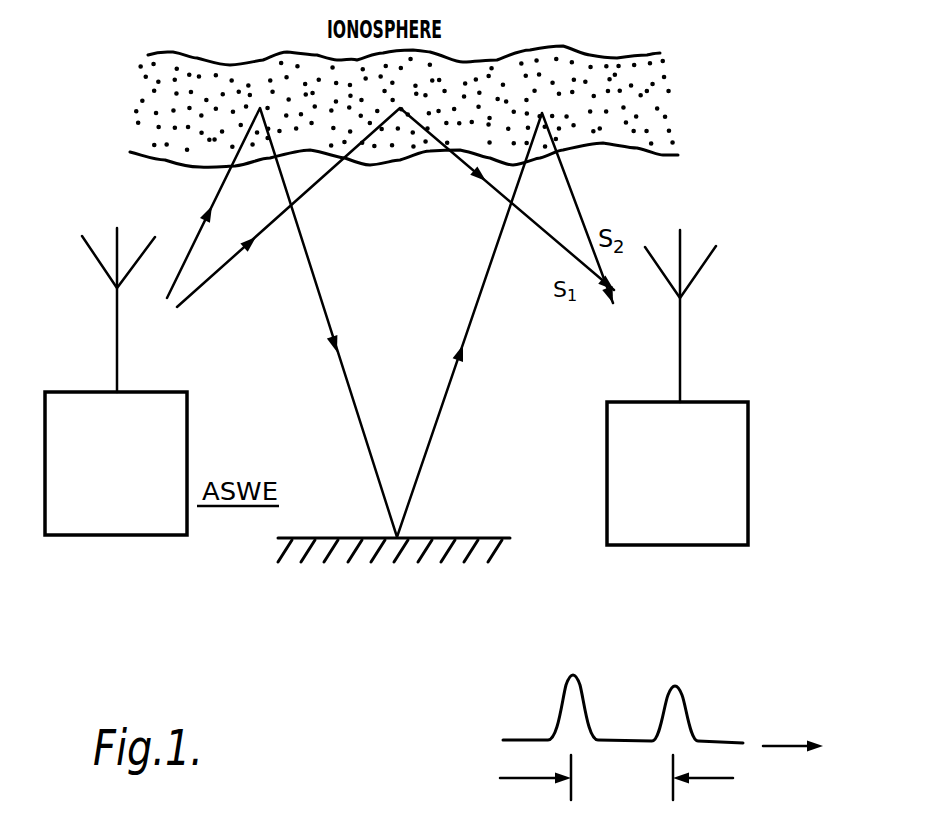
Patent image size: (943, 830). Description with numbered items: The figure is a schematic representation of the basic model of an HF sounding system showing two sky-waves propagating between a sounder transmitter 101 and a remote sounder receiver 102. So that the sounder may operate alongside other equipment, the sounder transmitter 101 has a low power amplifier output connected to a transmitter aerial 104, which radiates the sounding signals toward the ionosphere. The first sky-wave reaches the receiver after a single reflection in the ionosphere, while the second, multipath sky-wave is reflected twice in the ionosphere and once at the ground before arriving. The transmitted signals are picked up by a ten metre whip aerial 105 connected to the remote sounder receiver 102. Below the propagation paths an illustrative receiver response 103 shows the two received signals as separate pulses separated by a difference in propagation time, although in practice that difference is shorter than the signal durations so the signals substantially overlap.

The sounder transmitter 101 is at (145, 518).
The remote sounder receiver 102 is at (710, 530).
The receiver response 103 is at (703, 721).
The transmitter aerial 104 is at (102, 270).
The 10 m whip aerial 105 is at (680, 345).